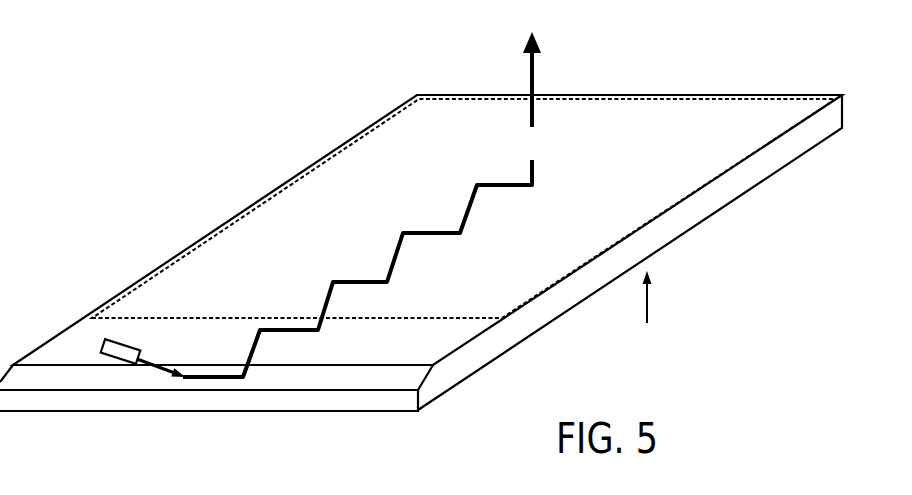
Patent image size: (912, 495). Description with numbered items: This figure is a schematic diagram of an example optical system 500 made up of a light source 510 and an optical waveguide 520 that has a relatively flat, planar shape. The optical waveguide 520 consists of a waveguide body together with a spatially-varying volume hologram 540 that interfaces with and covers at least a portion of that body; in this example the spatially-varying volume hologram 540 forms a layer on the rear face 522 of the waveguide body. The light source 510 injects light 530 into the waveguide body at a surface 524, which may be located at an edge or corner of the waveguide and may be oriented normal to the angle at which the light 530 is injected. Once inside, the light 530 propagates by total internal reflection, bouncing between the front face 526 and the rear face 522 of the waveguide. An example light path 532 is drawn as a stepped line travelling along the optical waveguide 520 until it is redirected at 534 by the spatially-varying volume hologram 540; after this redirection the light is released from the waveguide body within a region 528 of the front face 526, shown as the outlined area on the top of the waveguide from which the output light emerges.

The optical system 500 is at (688, 73).
The light source 510 is at (118, 352).
The optical waveguide 520 is at (459, 381).
The rear face 522 is at (561, 318).
The surface 524 is at (56, 387).
The front face 526 is at (413, 354).
The region 528 is at (254, 287).
The light 530 is at (155, 365).
The light path 532 is at (531, 94).
The redirection point 534 is at (542, 178).
The spatially-varying volume hologram 540 is at (645, 310).